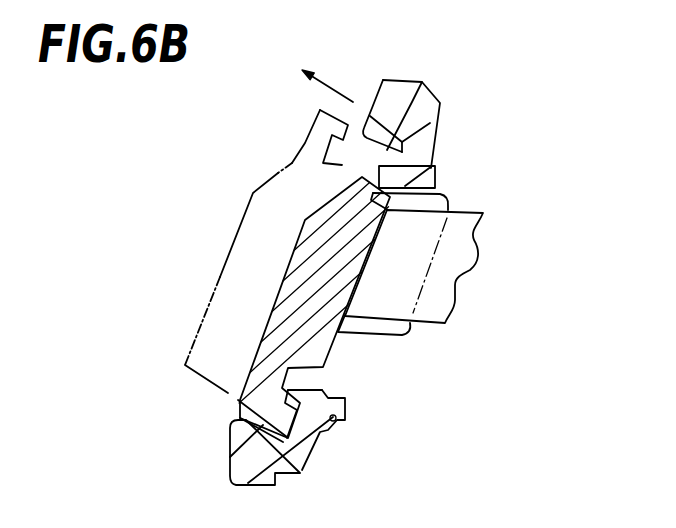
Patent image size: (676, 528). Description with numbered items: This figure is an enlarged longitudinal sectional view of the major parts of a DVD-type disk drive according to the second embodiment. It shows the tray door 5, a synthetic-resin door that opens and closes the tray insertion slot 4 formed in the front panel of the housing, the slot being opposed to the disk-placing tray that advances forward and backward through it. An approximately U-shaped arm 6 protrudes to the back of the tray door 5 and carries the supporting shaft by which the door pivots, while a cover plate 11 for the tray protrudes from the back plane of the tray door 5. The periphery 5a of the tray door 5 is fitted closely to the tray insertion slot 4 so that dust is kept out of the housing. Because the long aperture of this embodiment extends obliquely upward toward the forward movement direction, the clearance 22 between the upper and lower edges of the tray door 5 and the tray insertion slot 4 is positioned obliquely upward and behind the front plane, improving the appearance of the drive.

The tray insertion slot 4 is at (302, 380).
The tray door 5 is at (293, 283).
The periphery of the tray door 5a is at (440, 172).
The arm 6 is at (453, 270).
The cover plate 11 is at (448, 207).
The clearance 22 is at (402, 152).